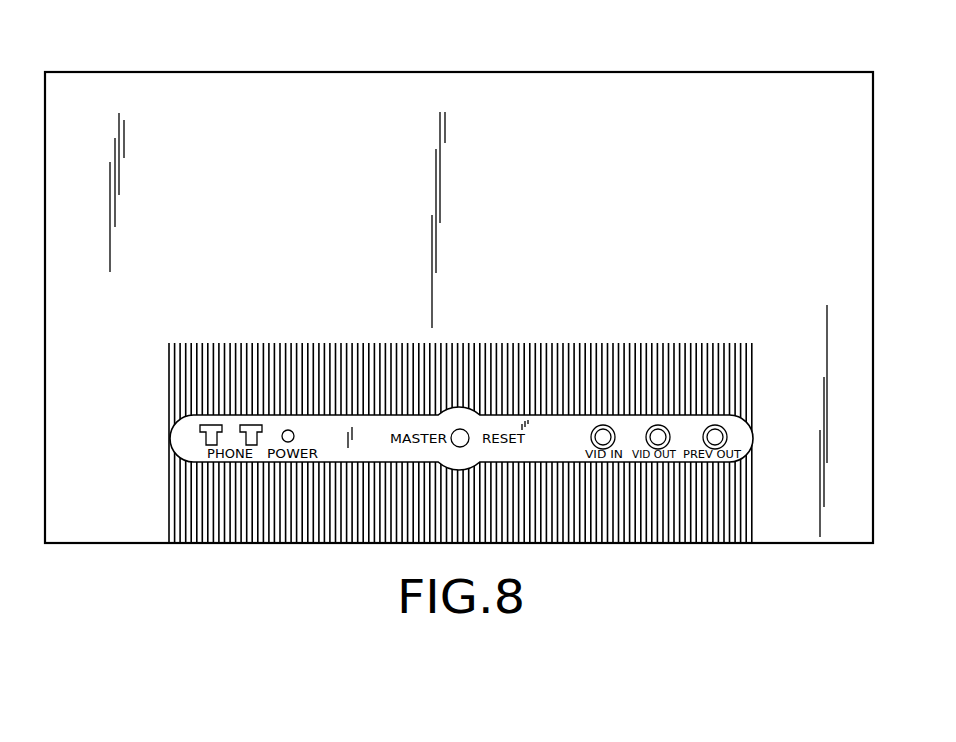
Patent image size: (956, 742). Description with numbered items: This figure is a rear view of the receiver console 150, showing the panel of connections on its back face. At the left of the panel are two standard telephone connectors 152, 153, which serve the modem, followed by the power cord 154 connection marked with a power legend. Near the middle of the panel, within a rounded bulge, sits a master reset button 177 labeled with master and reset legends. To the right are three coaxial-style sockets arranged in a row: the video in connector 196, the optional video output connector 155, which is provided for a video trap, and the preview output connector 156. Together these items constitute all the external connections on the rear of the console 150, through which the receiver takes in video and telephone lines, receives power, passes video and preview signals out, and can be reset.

The console 150 is at (535, 72).
The telephone connector 152 is at (200, 432).
The telephone connector 153 is at (245, 425).
The power cord 154 is at (288, 430).
The video output connector 155 is at (646, 440).
The preview output connector 156 is at (728, 437).
The master reset button 177 is at (467, 444).
The video in connector 196 is at (591, 437).